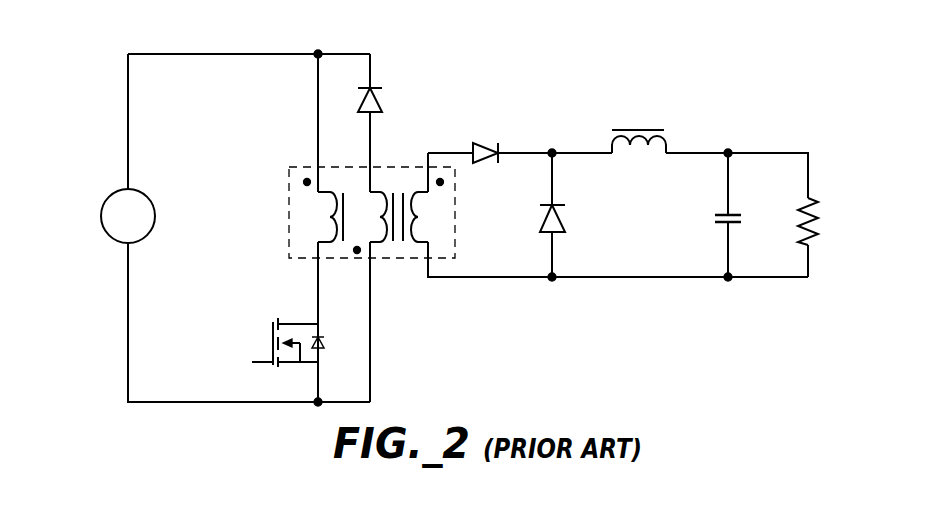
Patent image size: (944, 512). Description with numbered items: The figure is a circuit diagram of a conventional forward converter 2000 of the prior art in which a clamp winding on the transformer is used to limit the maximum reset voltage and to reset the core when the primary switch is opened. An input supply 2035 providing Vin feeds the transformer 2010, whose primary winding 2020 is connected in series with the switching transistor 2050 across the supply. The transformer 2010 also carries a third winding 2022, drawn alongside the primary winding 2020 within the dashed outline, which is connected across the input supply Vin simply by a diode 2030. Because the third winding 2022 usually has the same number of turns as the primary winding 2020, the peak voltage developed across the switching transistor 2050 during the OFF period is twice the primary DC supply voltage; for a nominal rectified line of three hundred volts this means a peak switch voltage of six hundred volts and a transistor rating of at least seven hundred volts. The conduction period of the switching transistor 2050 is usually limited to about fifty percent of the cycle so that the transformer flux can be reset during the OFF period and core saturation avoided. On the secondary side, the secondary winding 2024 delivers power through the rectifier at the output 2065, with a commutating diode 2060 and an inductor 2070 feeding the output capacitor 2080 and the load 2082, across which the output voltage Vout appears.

The forward converter 2000 is at (737, 49).
The transformer 2010 is at (369, 217).
The primary winding 2020 is at (312, 214).
The third winding 2022 is at (389, 234).
The secondary winding 2024 is at (424, 210).
The diode 2030 is at (376, 84).
The input supply 2035 is at (118, 240).
The switching transistor 2050 is at (265, 362).
The commutating diode 2060 is at (565, 221).
The output 2065 is at (500, 148).
The inductor 2070 is at (641, 126).
The output capacitor 2080 is at (738, 224).
The load 2082 is at (820, 232).